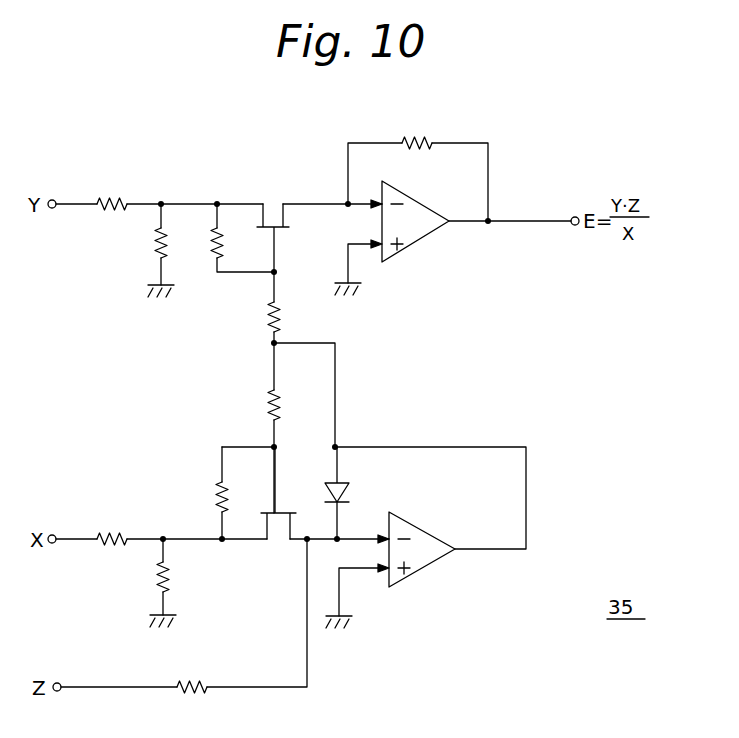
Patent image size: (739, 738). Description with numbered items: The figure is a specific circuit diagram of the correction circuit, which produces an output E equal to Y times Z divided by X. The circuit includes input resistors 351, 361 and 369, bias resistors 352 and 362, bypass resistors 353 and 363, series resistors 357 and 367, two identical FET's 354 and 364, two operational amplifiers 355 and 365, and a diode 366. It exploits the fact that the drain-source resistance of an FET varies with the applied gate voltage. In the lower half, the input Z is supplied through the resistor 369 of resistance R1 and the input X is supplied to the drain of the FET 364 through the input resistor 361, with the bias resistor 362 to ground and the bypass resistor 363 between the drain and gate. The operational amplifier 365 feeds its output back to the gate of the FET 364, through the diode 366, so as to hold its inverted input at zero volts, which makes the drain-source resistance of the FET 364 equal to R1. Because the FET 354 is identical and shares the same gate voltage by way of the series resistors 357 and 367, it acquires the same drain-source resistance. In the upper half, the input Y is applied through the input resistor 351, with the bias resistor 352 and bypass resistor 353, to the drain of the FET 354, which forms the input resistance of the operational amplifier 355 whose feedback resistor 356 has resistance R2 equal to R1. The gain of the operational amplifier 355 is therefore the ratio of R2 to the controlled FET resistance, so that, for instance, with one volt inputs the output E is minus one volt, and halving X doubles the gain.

The input resistor 351 is at (116, 200).
The bias resistor 352 is at (159, 251).
The bypass resistor 353 is at (212, 258).
The FET 354 is at (272, 200).
The operational amplifier 355 is at (418, 243).
The resistor 356 is at (429, 142).
The series resistor 357 is at (268, 318).
The input resistor 361 is at (98, 532).
The bias resistor 362 is at (175, 578).
The bypass resistor 363 is at (214, 485).
The FET 364 is at (280, 532).
The operational amplifier 365 is at (408, 576).
The diode 366 is at (355, 487).
The series resistor 367 is at (268, 405).
The input resistor 369 is at (204, 683).